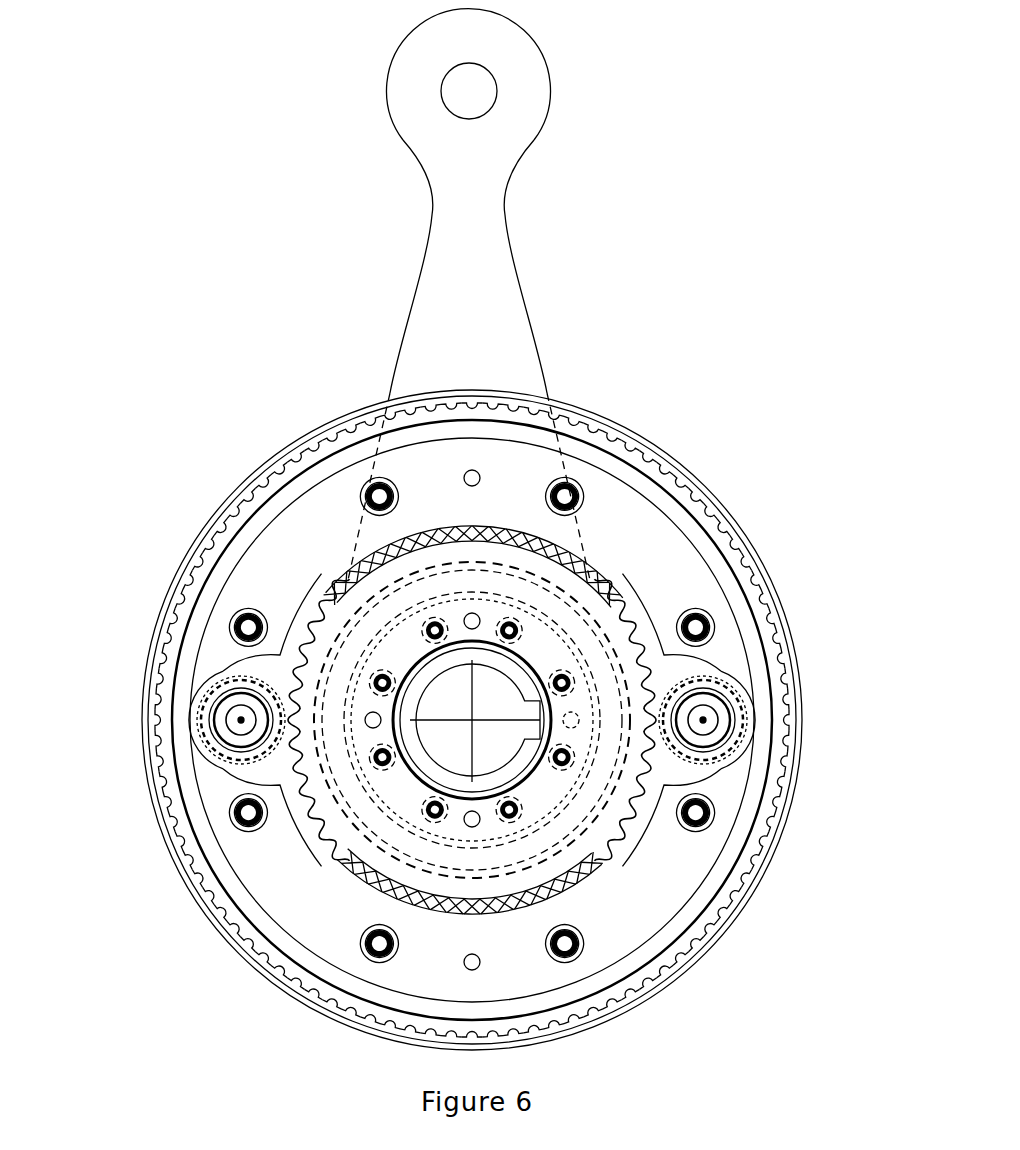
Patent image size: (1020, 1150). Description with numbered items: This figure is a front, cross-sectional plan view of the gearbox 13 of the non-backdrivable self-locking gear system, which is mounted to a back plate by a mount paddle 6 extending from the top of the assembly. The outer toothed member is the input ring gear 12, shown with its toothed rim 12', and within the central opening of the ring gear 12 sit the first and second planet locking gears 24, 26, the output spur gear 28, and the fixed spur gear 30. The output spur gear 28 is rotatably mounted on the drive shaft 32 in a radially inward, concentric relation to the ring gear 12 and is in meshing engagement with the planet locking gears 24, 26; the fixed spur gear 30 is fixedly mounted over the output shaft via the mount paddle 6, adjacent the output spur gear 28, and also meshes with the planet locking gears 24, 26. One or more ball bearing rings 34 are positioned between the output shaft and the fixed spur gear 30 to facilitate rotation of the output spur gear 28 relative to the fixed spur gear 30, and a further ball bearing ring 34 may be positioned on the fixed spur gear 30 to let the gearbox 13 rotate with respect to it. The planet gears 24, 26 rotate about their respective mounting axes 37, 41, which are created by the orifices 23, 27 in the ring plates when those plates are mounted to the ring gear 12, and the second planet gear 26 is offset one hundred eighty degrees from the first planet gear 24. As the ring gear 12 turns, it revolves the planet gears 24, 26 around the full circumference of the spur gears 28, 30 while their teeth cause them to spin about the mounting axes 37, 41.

The mount paddle 6 is at (522, 113).
The input ring gear 12 is at (472, 744).
The toothed outer rim of carrier plate 12' is at (472, 720).
The gearbox 13 is at (460, 699).
The orifice 23 is at (273, 690).
The first planet locking gear 24 is at (212, 735).
The second planet locking gear 26 is at (735, 733).
The orifice 27 is at (678, 677).
The output spur gear 28 is at (383, 560).
The fixed spur gear 30 is at (443, 533).
The drive shaft 32 is at (410, 795).
The ball bearing ring 34 is at (403, 652).
The mounting axis 37 is at (703, 710).
The mounting axis 41 is at (243, 715).